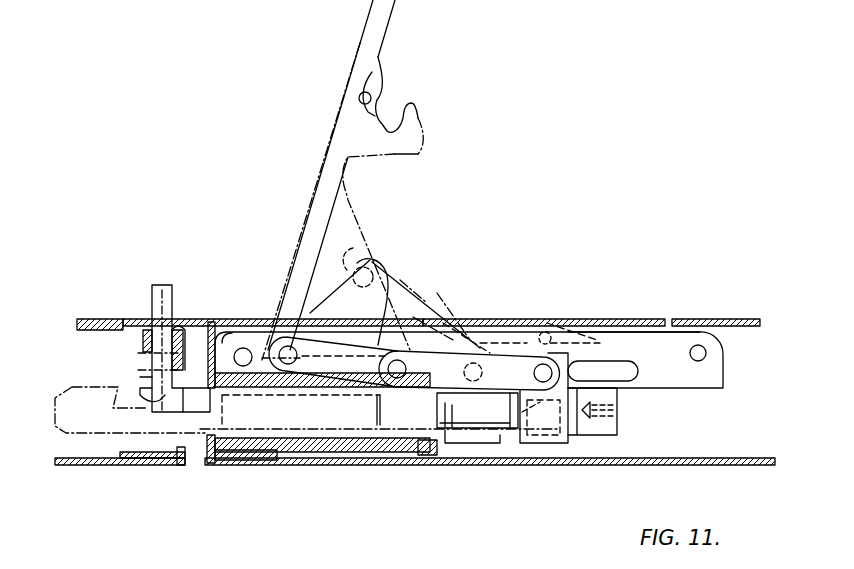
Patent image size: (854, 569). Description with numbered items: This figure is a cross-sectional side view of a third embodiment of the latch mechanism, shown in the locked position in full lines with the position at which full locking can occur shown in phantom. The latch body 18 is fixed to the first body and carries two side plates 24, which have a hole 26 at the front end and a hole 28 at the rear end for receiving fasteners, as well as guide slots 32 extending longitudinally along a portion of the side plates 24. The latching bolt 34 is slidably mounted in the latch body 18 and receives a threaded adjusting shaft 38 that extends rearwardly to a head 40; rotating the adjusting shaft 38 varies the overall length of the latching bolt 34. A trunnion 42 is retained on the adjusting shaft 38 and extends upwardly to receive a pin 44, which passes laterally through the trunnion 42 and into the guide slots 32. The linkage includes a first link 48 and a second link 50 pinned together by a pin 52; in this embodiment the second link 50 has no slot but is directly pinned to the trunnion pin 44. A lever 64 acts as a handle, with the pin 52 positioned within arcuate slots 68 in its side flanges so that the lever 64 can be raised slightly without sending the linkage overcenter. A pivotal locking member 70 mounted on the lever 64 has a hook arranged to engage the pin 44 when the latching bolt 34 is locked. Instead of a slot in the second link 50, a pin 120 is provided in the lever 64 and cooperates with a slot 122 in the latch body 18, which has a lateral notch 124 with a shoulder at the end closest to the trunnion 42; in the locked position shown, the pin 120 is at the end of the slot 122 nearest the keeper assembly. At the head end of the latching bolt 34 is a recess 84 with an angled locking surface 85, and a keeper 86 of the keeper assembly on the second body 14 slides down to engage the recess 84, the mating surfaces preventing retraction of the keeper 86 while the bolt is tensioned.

The second body 14 is at (91, 319).
The latch body 18 is at (430, 456).
The side plates 24 is at (680, 392).
The hole 26 is at (243, 348).
The hole 28 is at (707, 353).
The guide slots 32 is at (616, 362).
The latching bolt 34 is at (212, 330).
The adjusting shaft 38 is at (480, 430).
The head 40 is at (606, 438).
The trunnion 42 is at (556, 444).
The pin 44 is at (547, 370).
The first link 48 is at (327, 335).
The second link 50 is at (517, 355).
The pin 52 is at (426, 354).
The lever 64 is at (620, 324).
The slots 68 is at (398, 462).
The locking member 70 is at (420, 128).
The recess 84 is at (153, 404).
The locking surface 85 is at (150, 395).
The keeper 86 is at (158, 283).
The pin 120 is at (261, 356).
The slot 122 is at (410, 293).
The lateral notch 124 is at (425, 306).